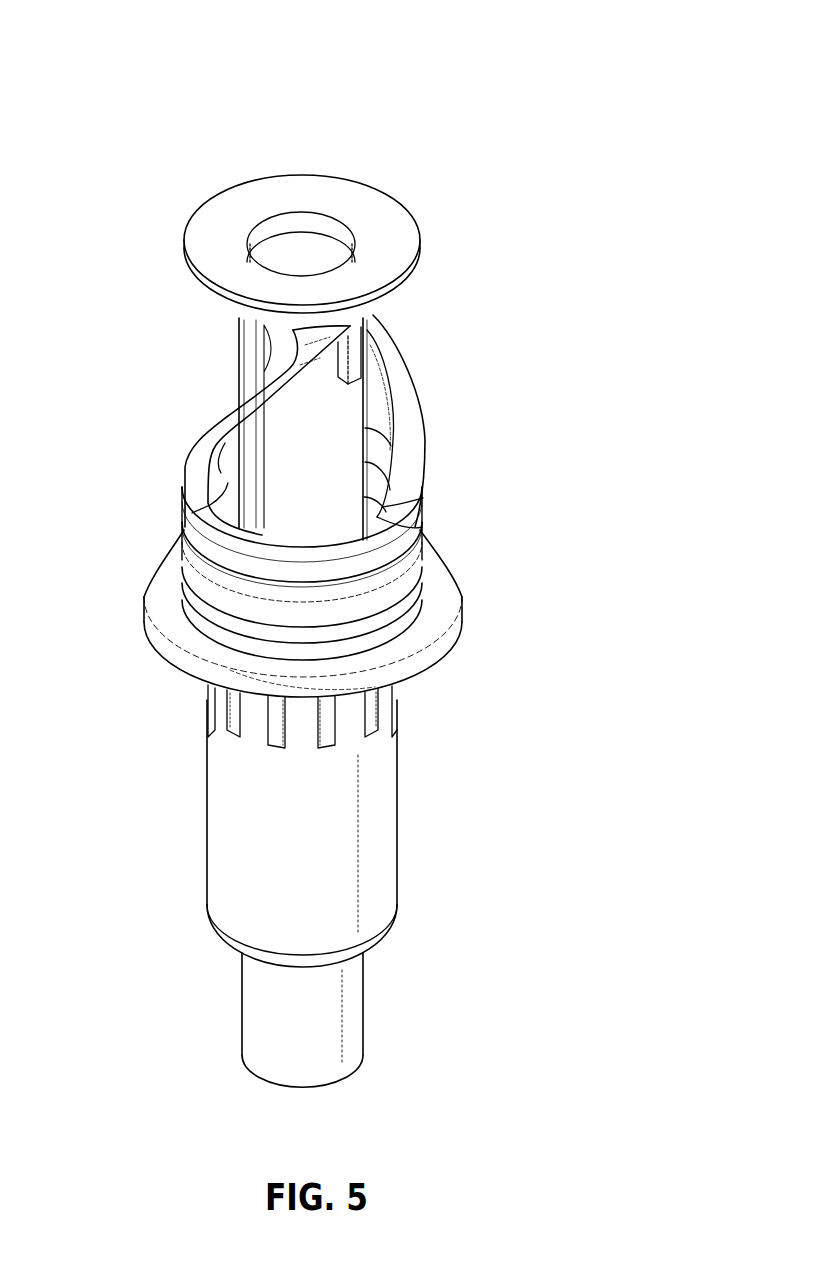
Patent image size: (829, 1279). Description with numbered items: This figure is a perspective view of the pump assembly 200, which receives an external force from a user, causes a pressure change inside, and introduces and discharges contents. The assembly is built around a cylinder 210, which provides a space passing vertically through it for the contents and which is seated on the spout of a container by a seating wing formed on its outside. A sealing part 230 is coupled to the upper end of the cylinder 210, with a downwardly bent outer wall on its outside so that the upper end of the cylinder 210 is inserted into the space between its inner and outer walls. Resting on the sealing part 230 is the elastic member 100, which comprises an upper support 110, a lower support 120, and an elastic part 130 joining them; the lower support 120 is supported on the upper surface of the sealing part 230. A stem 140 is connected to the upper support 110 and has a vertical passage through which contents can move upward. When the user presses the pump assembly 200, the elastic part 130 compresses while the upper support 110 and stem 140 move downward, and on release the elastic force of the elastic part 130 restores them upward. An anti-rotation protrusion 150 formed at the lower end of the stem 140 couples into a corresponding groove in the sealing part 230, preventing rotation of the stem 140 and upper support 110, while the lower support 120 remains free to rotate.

The pump assembly 200 is at (475, 37).
The elastic member 100 is at (206, 181).
The upper support 110 is at (398, 275).
The lower support 120 is at (183, 520).
The elastic part 130 is at (224, 415).
The stem 140 is at (350, 412).
The anti-rotation protrusion 150 is at (237, 342).
The cylinder 210 is at (212, 831).
The sealing part 230 is at (187, 573).